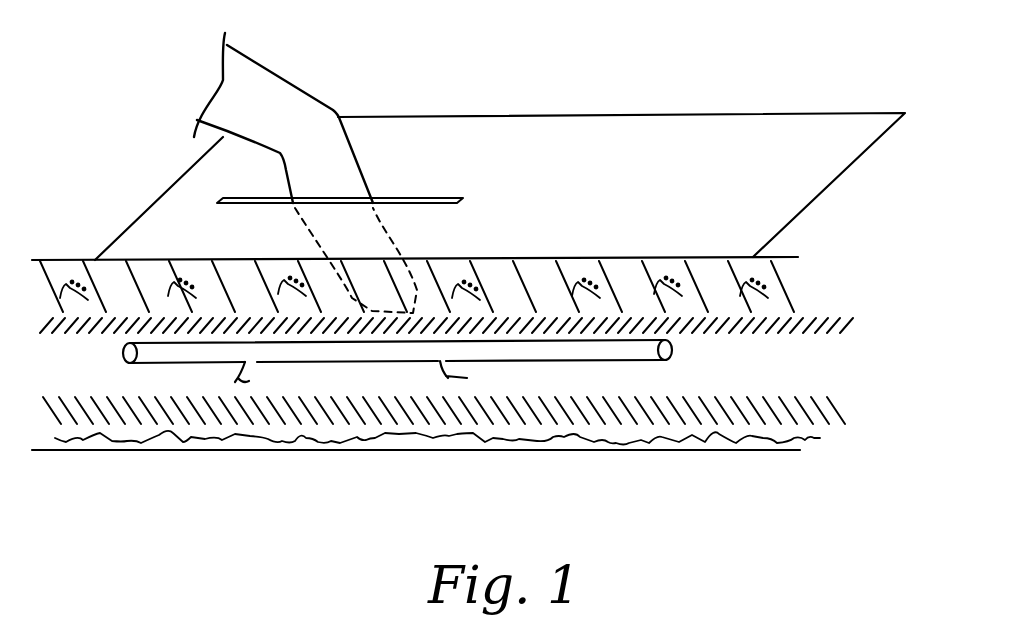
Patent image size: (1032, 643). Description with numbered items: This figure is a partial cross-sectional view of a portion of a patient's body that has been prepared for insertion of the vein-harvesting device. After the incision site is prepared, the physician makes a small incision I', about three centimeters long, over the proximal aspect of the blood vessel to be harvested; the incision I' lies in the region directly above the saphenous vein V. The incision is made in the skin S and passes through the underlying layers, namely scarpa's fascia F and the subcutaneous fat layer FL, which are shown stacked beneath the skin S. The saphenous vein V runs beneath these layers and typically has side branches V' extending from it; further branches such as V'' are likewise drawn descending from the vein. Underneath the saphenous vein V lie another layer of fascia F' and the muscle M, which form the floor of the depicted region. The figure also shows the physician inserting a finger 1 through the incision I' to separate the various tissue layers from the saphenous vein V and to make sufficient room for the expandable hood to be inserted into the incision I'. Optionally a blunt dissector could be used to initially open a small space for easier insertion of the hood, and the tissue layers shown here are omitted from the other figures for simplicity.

The finger 1 is at (312, 92).
The incision I' is at (359, 143).
The skin S is at (827, 167).
The subcutaneous fat layer FL is at (752, 273).
The scarpa's fascia F is at (478, 309).
The fascia F' is at (453, 399).
The muscle M is at (787, 430).
The saphenous vein V is at (669, 435).
The side branch V' is at (254, 432).
The second suction line V'' is at (478, 424).